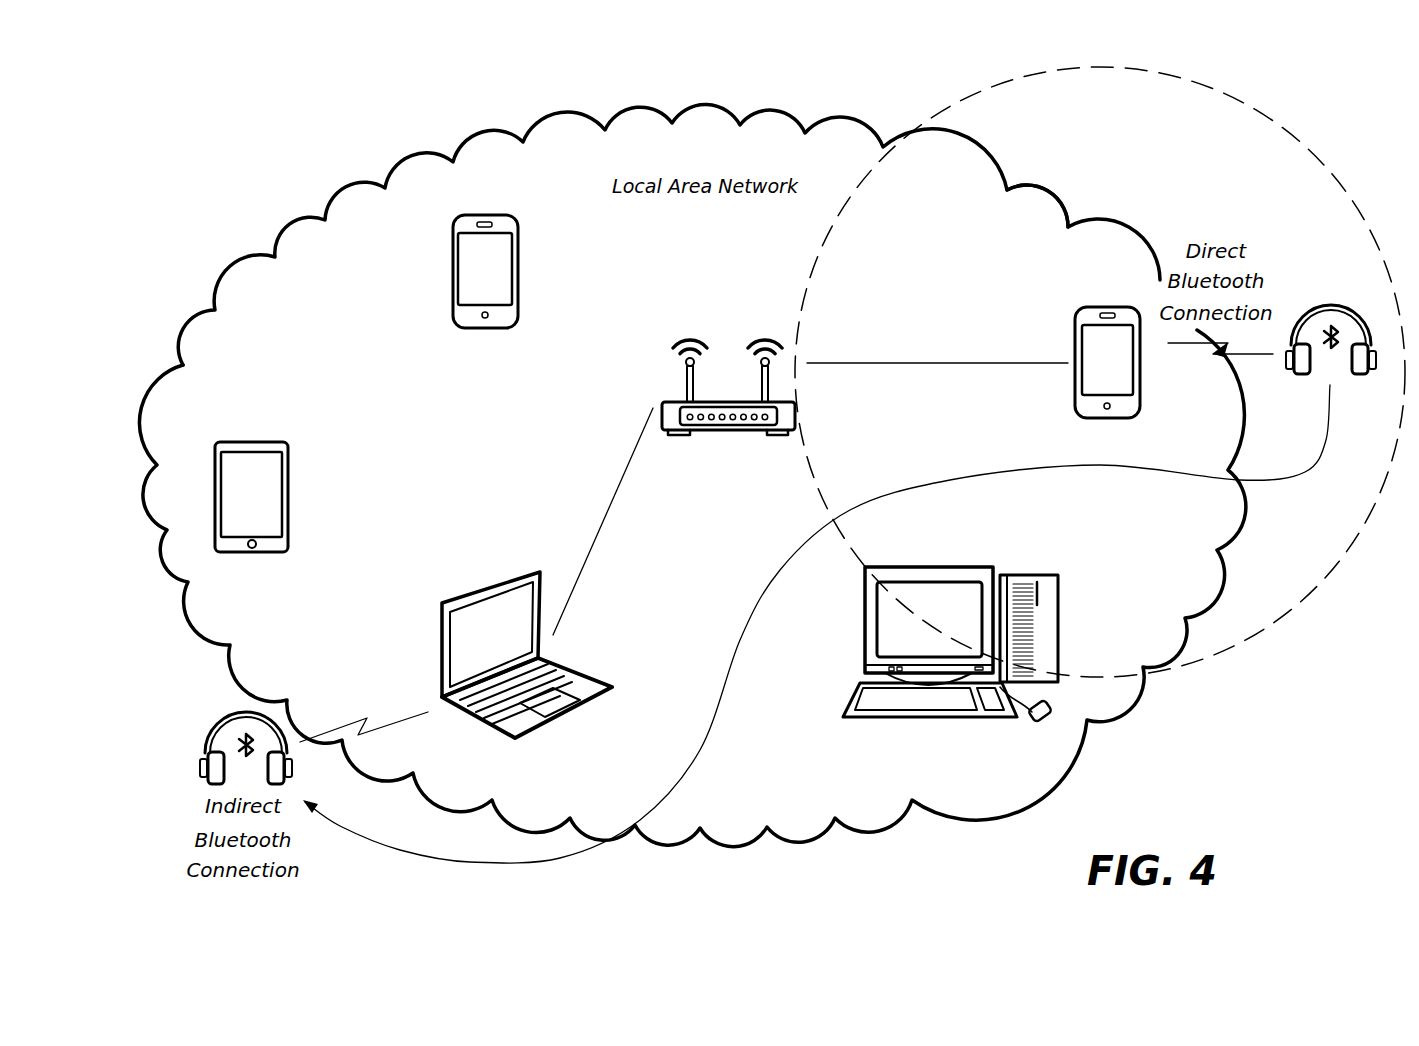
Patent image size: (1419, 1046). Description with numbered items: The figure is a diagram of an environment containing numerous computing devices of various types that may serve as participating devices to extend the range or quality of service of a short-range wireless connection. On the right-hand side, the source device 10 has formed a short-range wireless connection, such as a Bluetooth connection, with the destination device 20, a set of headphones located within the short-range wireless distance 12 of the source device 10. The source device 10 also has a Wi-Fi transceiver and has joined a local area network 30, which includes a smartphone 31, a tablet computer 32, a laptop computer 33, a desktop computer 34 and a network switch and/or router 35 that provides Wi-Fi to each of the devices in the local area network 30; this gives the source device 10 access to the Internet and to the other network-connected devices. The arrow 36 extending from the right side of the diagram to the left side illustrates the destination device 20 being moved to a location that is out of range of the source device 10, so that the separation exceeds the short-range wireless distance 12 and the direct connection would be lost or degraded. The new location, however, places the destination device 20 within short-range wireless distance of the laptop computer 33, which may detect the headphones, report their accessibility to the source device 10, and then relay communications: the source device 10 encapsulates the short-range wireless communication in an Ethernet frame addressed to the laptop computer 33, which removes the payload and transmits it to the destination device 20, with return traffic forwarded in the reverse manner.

The source device 10 is at (1090, 307).
The short-range wireless distance 12 is at (1302, 138).
The destination device 20 is at (1323, 307).
The local area network 30 is at (1033, 188).
The smartphone 31 is at (518, 275).
The tablet computer 32 is at (290, 497).
The laptop computer 33 is at (487, 583).
The desktop computer 34 is at (983, 565).
The network switch and/or router 35 is at (665, 402).
The arrow 36 is at (1307, 470).